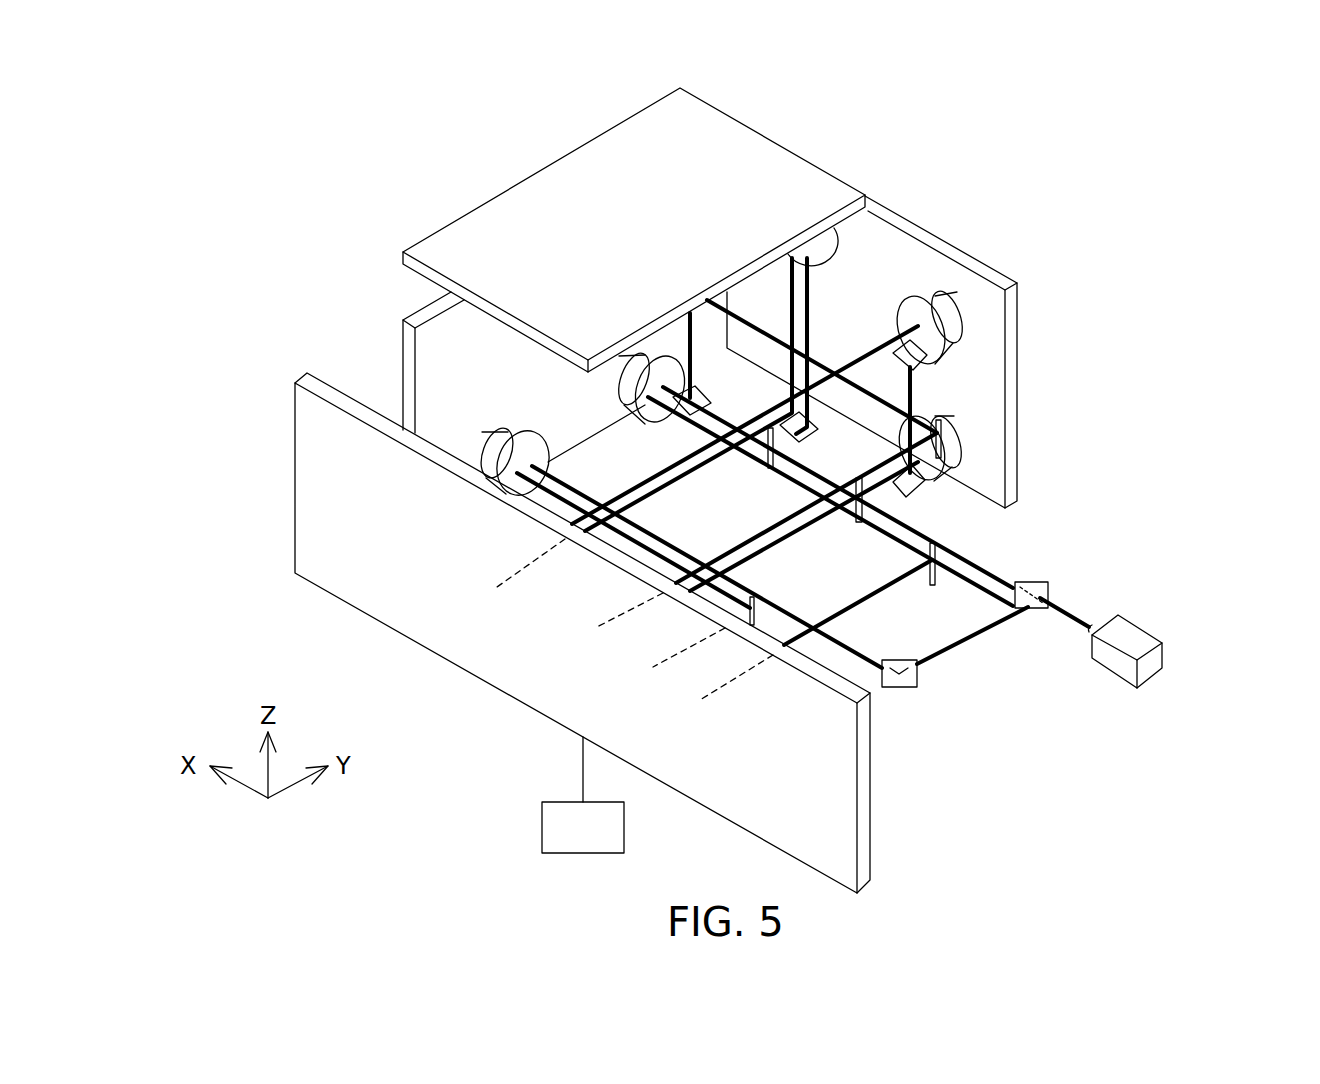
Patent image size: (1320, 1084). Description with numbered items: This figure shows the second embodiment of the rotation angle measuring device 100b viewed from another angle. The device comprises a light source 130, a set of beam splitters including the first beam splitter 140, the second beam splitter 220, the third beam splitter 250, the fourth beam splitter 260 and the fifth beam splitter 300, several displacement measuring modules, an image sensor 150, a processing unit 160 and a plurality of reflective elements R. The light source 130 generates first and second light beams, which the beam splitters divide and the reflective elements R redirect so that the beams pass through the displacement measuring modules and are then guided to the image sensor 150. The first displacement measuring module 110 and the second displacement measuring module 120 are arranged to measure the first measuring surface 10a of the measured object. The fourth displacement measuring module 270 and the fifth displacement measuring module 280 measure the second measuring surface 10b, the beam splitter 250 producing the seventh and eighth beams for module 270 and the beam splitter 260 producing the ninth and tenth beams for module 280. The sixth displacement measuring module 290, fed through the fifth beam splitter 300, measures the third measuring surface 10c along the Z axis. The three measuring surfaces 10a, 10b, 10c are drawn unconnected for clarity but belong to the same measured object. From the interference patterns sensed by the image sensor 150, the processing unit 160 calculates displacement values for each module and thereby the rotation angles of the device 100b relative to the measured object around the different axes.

The first measuring surface 10a is at (458, 350).
The second measuring surface 10b is at (883, 257).
The third measuring surface 10c is at (412, 274).
The rotation angle measuring device 100b is at (1020, 722).
The first displacement measuring module 110 is at (623, 382).
The second displacement measuring module 120 is at (492, 450).
The light source 130 is at (1150, 675).
The first beam splitter 140 is at (1050, 592).
The image sensor 150 is at (300, 492).
The processing unit 160 is at (605, 843).
The second beam splitter 220 is at (688, 414).
The third beam splitter 250 is at (858, 522).
The fourth beam splitter 260 is at (920, 494).
The fourth displacement measuring module 270 is at (962, 440).
The fifth displacement measuring module 280 is at (955, 313).
The sixth displacement measuring module 290 is at (822, 244).
The fifth beam splitter 300 is at (770, 468).
The reflective elements R is at (920, 372).